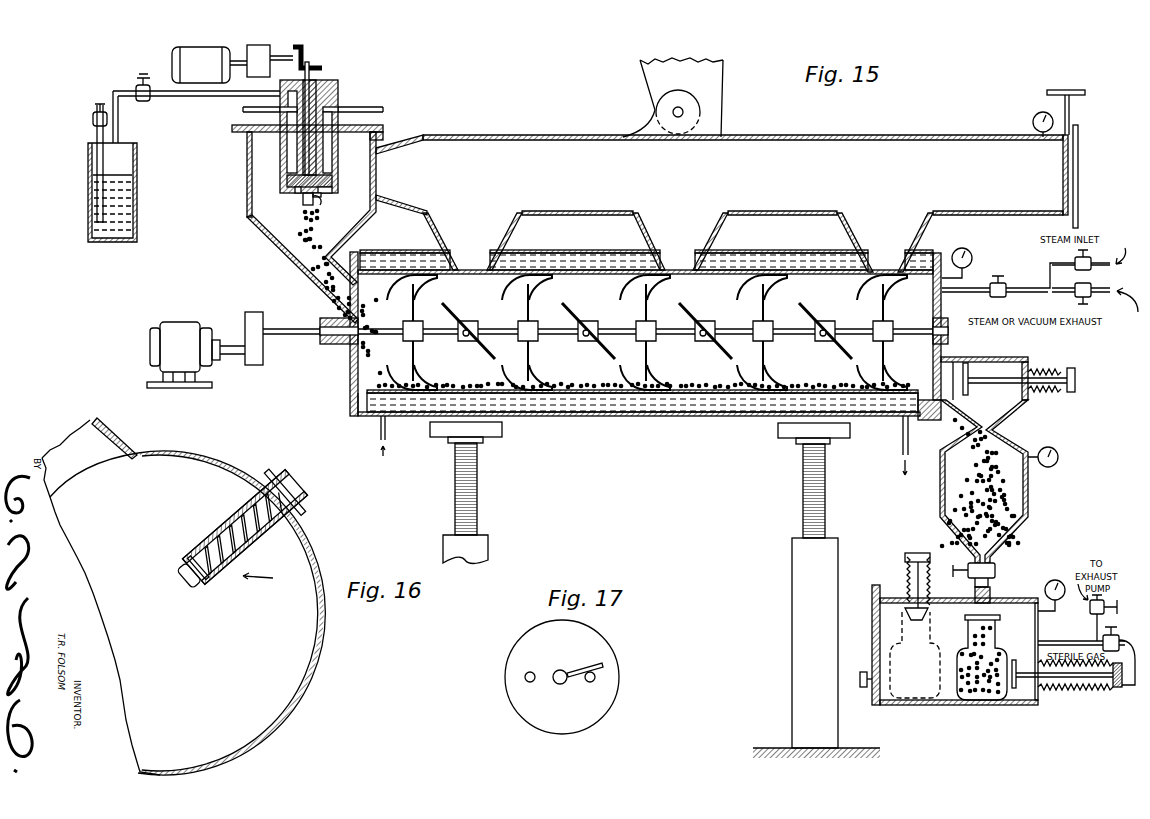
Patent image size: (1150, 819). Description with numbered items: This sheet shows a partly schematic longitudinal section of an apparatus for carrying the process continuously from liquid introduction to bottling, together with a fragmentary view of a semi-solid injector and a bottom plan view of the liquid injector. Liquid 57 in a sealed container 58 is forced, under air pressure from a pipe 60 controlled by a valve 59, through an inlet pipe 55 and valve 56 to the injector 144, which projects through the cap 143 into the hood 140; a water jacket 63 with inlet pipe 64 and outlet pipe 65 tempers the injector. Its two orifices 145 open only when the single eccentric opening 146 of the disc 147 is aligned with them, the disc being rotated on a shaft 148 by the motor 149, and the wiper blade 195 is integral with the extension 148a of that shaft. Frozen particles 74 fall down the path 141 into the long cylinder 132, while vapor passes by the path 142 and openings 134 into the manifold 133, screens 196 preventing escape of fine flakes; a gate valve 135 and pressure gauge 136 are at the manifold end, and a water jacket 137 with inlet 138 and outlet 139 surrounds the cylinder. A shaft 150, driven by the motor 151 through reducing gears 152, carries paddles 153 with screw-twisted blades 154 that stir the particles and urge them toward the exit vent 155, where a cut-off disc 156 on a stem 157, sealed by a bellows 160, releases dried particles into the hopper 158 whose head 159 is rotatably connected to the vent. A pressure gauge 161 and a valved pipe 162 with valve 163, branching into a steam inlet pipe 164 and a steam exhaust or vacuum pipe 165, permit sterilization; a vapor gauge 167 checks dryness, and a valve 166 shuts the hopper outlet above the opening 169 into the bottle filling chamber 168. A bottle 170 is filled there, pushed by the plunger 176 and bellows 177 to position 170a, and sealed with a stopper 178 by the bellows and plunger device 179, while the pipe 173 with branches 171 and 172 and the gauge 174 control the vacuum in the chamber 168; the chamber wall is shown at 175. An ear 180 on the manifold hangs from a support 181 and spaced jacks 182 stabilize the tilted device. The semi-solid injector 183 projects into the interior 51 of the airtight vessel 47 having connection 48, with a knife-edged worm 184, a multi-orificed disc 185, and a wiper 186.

In FIG. 16, the airtight vessel 47 is at (327, 674).
In FIG. 16, the connection 48 is at (114, 432).
In FIG. 16, the interior 51 is at (282, 712).
In FIG. 15, the inlet pipe 55 is at (220, 96).
In FIG. 15, the valve 56 is at (146, 102).
In FIG. 15, the liquid 57 is at (134, 213).
In FIG. 15, the sealed container 58 is at (88, 209).
In FIG. 15, the valve 59 is at (93, 120).
In FIG. 15, the pipe 60 is at (95, 138).
In FIG. 15, the water jacket 63 is at (287, 155).
In FIG. 15, the inlet pipe 64 is at (245, 109).
In FIG. 15, the outlet pipe 65 is at (364, 104).
In FIG. 15, the particles 74 is at (318, 284).
In FIG. 15, the cylinder 132 is at (580, 396).
In FIG. 15, the manifold 133 is at (522, 135).
In FIG. 15, the openings 134 is at (471, 267).
In FIG. 15, the gate valve 135 is at (1085, 215).
In FIG. 15, the pressure gauge 136 is at (1033, 122).
In FIG. 15, the water jacket 137 is at (405, 262).
In FIG. 15, the inlet 138 is at (380, 440).
In FIG. 15, the outlet 139 is at (902, 448).
In FIG. 15, the hood 140 is at (248, 212).
In FIG. 15, the path 141 is at (279, 258).
In FIG. 15, the path 142 is at (388, 157).
In FIG. 15, the cap 143 is at (232, 129).
In FIG. 15, the injector 144 is at (352, 91).
In FIG. 17, the injector 144 is at (620, 667).
In FIG. 15, the orifices 145 is at (297, 194).
In FIG. 17, the orifices 145 is at (527, 681).
In FIG. 15, the eccentric opening 146 is at (288, 181).
In FIG. 15, the disc 147 is at (332, 184).
In FIG. 15, the shaft 148 is at (318, 82).
In FIG. 15, the extension 148a is at (308, 206).
In FIG. 17, the extension 148a is at (559, 685).
In FIG. 15, the motor 149 is at (172, 53).
In FIG. 15, the shaft 150 is at (620, 322).
In FIG. 15, the motor 151 is at (181, 330).
In FIG. 15, the reducing gears 152 is at (259, 365).
In FIG. 15, the paddles 153 is at (692, 314).
In FIG. 15, the screw-twisted blades 154 is at (789, 300).
In FIG. 15, the exit vent 155 is at (941, 373).
In FIG. 15, the cut-off disc 156 is at (977, 360).
In FIG. 15, the stem 157 is at (997, 384).
In FIG. 15, the hopper 158 is at (1028, 505).
In FIG. 15, the head 159 is at (1023, 355).
In FIG. 15, the bellows 160 is at (1055, 392).
In FIG. 15, the pressure gauge 161 is at (971, 251).
In FIG. 15, the pipe 162 is at (1020, 288).
In FIG. 15, the valve 163 is at (990, 294).
In FIG. 15, the steam inlet pipe 164 is at (1092, 270).
In FIG. 15, the steam exhaust or vacuum pipe 165 is at (1092, 297).
In FIG. 15, the valve 166 is at (995, 572).
In FIG. 15, the vapor gauge 167 is at (1058, 457).
In FIG. 15, the bottle filling chamber 168 is at (966, 705).
In FIG. 15, the opening 169 is at (999, 595).
In FIG. 15, the bottle 170 is at (1000, 656).
In FIG. 15, the position 170a is at (910, 695).
In FIG. 15, the branch 171 is at (1106, 610).
In FIG. 15, the branch 172 is at (1122, 688).
In FIG. 15, the pipe 173 is at (1073, 631).
In FIG. 15, the gauge 174 is at (1058, 580).
In FIG. 15, the chamber 175 is at (874, 640).
In FIG. 15, the plunger 176 is at (1034, 690).
In FIG. 15, the bellows 177 is at (1090, 690).
In FIG. 15, the seal or stopper 178 is at (922, 620).
In FIG. 15, the bellows and plunger device 179 is at (901, 572).
In FIG. 15, the ear 180 is at (644, 120).
In FIG. 15, the support 181 is at (650, 80).
In FIG. 15, the jacks 182 is at (489, 548).
In FIG. 16, the injector 183 is at (272, 576).
In FIG. 16, the knife-edged worm 184 is at (236, 517).
In FIG. 16, the multi-orificed disc 185 is at (266, 558).
In FIG. 16, the wiper 186 is at (189, 597).
In FIG. 15, the wiper blade 195 is at (321, 205).
In FIG. 17, the wiper blade 195 is at (578, 671).
In FIG. 15, the screens 196 is at (376, 174).